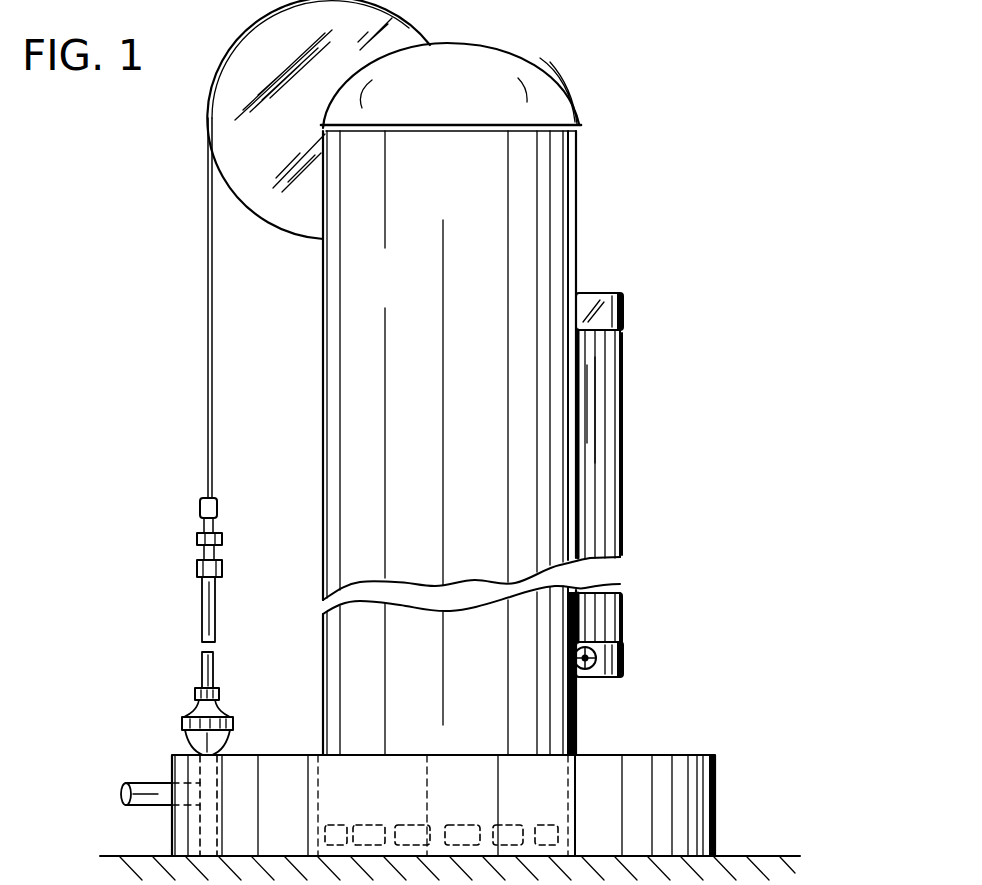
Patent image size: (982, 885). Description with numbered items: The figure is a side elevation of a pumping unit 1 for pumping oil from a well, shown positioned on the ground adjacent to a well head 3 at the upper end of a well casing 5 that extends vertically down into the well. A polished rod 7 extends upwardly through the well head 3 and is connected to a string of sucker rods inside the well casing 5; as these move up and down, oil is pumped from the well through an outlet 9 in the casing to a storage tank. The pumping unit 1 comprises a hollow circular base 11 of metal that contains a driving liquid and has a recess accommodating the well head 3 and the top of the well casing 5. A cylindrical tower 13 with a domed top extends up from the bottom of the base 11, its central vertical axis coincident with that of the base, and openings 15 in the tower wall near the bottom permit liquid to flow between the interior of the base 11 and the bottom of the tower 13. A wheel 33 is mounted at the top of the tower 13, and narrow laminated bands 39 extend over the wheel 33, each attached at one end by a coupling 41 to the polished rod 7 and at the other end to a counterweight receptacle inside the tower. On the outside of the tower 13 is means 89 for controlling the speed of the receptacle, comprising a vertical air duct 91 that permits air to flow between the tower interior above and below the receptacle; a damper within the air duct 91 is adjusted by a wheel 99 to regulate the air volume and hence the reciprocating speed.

The pumping unit 1 is at (600, 50).
The well head 3 is at (218, 712).
The well casing 5 is at (198, 808).
The polished rod 7 is at (202, 618).
The outlet 9 is at (138, 782).
The circular base 11 is at (692, 757).
The cylindrical tower 13 is at (323, 350).
The openings 15 is at (508, 820).
The wheel 33 is at (368, 6).
The laminated bands 39 is at (206, 338).
The coupling 41 is at (205, 525).
The speed controlling means 89 is at (665, 470).
The air duct 91 is at (621, 410).
The wheel 99 is at (586, 678).